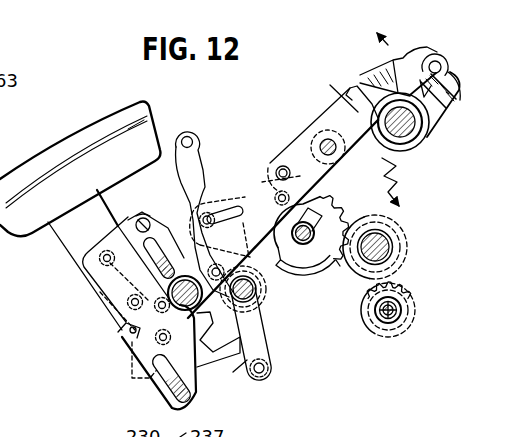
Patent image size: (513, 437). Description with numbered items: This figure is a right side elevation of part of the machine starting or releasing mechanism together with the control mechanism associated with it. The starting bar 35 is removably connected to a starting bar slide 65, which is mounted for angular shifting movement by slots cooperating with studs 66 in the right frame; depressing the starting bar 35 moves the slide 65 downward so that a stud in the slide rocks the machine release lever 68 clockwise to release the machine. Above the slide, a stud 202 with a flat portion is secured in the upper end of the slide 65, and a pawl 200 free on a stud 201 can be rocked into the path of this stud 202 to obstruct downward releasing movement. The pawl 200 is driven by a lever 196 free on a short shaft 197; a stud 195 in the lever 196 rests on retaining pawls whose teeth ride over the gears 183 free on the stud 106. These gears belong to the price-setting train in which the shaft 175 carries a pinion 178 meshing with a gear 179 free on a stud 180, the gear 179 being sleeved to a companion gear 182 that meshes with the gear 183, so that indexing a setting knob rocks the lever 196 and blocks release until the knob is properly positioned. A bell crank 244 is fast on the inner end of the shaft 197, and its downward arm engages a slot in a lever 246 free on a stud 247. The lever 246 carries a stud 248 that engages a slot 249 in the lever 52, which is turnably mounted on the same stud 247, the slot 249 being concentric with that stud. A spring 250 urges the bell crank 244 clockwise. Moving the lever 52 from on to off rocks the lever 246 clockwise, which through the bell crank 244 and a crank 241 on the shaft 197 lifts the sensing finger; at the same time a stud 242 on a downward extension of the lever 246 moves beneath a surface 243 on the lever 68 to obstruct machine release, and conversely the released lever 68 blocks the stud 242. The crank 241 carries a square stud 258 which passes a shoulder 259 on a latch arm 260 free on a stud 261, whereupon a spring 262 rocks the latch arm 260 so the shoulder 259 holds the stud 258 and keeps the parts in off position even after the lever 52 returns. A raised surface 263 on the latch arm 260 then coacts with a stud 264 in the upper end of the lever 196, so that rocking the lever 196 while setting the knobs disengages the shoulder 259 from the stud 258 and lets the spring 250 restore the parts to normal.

The starting bar 35 is at (63, 144).
The lever 52 is at (197, 150).
The starting bar slide 65 is at (108, 240).
The studs 66 is at (167, 393).
The lever 68 is at (209, 358).
The stud 106 is at (324, 214).
The shaft 175 is at (396, 316).
The pinion 178 is at (399, 299).
The gear 179 is at (398, 254).
The stud 180 is at (388, 238).
The companion gear 182 is at (309, 259).
The gear 183 is at (340, 269).
The stud 195 is at (285, 166).
The lever 196 is at (406, 67).
The short shaft 197 is at (322, 140).
The pawl 200 is at (167, 237).
The stud 201 is at (122, 331).
The stud 202 is at (139, 220).
The crank 241 is at (333, 118).
The stud 242 is at (272, 364).
The surface 243 is at (235, 372).
The bell crank 244 is at (368, 151).
The lever 246 is at (266, 339).
The stud 247 is at (262, 285).
The stud 248 is at (210, 215).
The slot 249 is at (215, 240).
The spring 250 is at (394, 173).
The square stud 258 is at (352, 103).
The shoulder 259 is at (345, 85).
The latch arm 260 is at (436, 128).
The stud 261 is at (405, 138).
The spring 262 is at (396, 58).
The raised surface 263 is at (449, 73).
The stud 264 is at (439, 59).